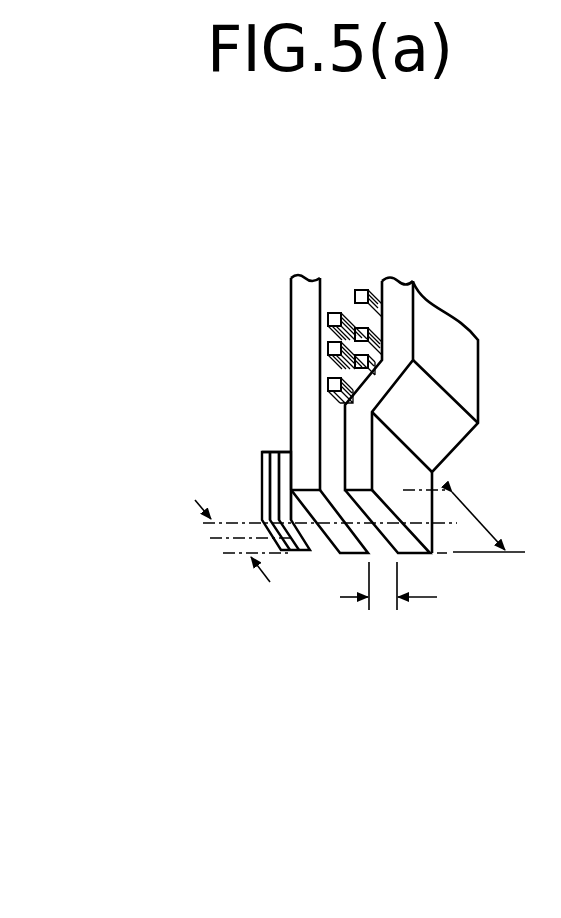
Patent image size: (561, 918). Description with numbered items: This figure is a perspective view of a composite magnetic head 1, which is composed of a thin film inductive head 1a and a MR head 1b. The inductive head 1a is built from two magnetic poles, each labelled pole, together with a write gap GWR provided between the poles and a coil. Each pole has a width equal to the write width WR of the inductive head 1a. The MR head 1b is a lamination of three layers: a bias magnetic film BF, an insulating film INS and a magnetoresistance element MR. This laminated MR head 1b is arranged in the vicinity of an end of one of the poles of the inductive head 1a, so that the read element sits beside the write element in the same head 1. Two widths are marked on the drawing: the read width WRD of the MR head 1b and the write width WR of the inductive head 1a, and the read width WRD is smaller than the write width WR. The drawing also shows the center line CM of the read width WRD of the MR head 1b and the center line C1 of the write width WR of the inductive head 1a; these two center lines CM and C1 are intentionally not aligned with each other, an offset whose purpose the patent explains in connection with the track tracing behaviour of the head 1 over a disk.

The composite magnetic head 1 is at (92, 315).
The thin film inductive head 1a is at (309, 248).
The MR head 1b is at (215, 475).
The magnetic pole is at (288, 297).
The element coil is at (358, 288).
The magnetoresistance element MR is at (260, 465).
The insulating film INS is at (273, 453).
The write width WR is at (464, 521).
The read width WRD is at (217, 532).
The center line of the read width CM is at (223, 548).
The bias magnetic film BF is at (318, 553).
The write gap GWR is at (382, 597).
The center line of the write width C1 is at (443, 527).